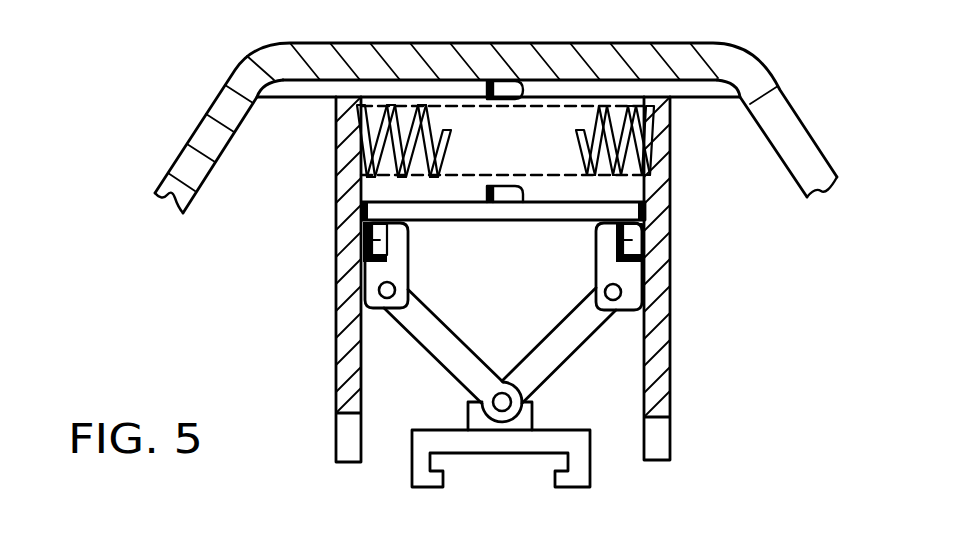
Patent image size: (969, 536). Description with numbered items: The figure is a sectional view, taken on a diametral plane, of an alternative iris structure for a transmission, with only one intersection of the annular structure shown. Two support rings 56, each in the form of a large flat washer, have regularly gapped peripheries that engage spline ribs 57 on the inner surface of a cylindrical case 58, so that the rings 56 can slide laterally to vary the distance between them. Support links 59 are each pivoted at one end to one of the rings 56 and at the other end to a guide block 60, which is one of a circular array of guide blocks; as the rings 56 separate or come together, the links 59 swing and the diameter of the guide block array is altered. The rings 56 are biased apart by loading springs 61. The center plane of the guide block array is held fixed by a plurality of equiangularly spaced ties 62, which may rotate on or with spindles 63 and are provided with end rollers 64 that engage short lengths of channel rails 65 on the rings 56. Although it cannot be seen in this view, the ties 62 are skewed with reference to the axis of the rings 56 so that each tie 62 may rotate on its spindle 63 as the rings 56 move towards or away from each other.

The support ring 56 is at (350, 333).
The spline rib 57 is at (653, 90).
The cylindrical case 58 is at (247, 80).
The support link 59 is at (432, 345).
The guide block 60 is at (580, 460).
The loading spring 61 is at (407, 117).
The tie 62 is at (417, 210).
The spindle 63 is at (513, 87).
The end roller 64 is at (365, 240).
The channel rail 65 is at (367, 280).